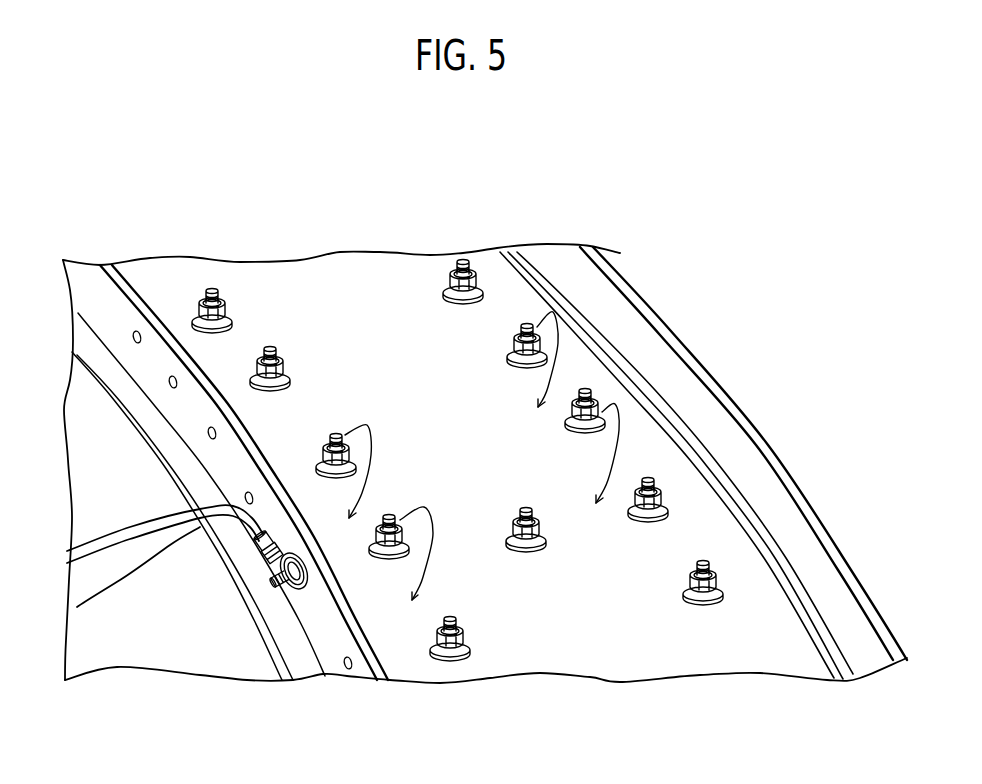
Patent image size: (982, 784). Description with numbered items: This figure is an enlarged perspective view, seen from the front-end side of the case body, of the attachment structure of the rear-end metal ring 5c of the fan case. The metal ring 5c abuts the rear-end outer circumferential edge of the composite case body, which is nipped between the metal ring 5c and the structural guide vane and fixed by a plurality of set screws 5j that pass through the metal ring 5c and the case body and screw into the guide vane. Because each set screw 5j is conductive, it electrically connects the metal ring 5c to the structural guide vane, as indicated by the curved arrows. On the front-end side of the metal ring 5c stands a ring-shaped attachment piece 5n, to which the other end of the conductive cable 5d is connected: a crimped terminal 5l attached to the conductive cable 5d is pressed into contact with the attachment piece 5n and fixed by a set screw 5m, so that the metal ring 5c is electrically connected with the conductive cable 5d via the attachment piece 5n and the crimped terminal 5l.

The attachment piece 5n is at (87, 282).
The set screw 5j is at (272, 347).
The conductive cable 5d is at (93, 538).
The crimped terminal 5l is at (254, 539).
The set screw 5m is at (270, 583).
The metal ring 5c is at (767, 620).